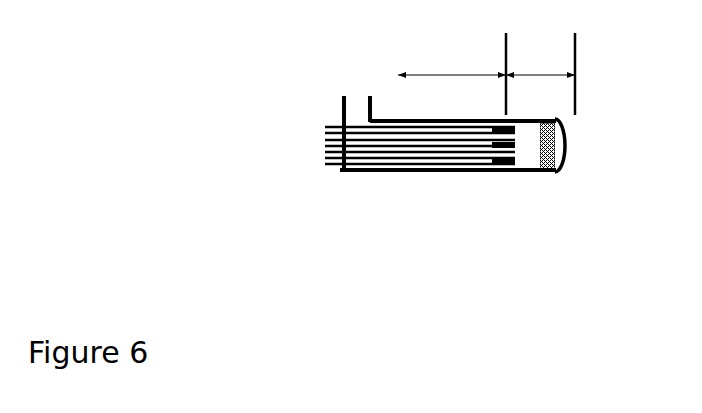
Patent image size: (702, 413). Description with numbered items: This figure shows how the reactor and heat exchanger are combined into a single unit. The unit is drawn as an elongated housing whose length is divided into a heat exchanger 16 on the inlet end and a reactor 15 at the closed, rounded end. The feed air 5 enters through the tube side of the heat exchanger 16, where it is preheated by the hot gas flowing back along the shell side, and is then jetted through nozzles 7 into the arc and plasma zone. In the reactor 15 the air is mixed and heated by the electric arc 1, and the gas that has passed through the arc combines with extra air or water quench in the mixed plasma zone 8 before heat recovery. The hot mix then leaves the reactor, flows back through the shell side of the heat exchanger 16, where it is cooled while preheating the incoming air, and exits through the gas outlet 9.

The electric arc 1 is at (566, 147).
The feed air 5 is at (540, 131).
The nozzles 7 is at (503, 167).
The mixed plasma zone 8 is at (542, 158).
The gas outlet 9 is at (356, 121).
The reactor 15 is at (540, 74).
The heat exchanger 16 is at (452, 74).